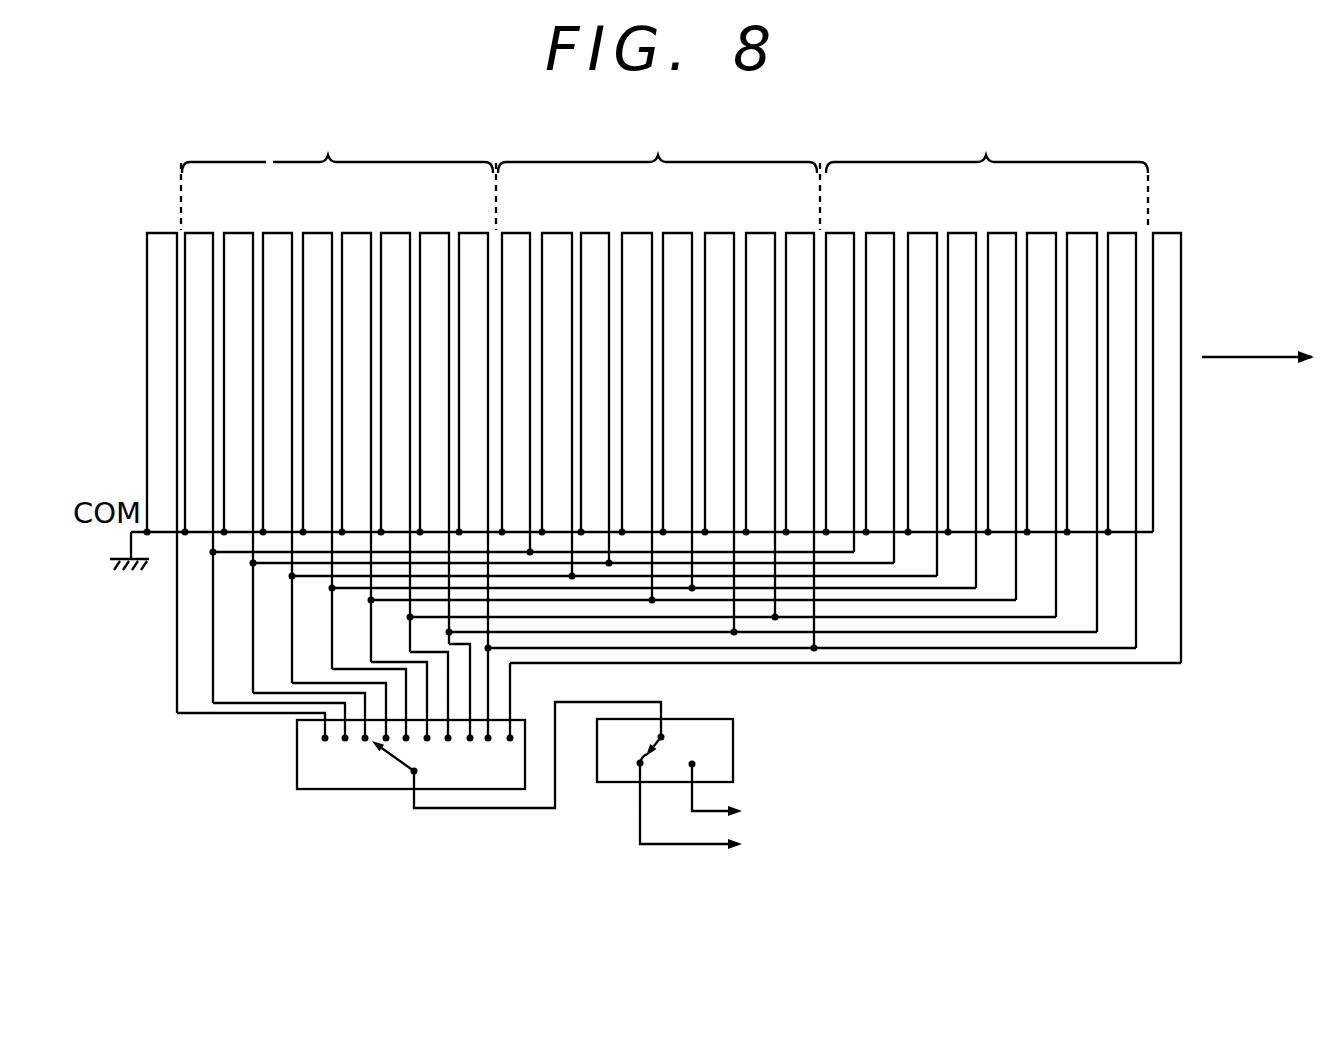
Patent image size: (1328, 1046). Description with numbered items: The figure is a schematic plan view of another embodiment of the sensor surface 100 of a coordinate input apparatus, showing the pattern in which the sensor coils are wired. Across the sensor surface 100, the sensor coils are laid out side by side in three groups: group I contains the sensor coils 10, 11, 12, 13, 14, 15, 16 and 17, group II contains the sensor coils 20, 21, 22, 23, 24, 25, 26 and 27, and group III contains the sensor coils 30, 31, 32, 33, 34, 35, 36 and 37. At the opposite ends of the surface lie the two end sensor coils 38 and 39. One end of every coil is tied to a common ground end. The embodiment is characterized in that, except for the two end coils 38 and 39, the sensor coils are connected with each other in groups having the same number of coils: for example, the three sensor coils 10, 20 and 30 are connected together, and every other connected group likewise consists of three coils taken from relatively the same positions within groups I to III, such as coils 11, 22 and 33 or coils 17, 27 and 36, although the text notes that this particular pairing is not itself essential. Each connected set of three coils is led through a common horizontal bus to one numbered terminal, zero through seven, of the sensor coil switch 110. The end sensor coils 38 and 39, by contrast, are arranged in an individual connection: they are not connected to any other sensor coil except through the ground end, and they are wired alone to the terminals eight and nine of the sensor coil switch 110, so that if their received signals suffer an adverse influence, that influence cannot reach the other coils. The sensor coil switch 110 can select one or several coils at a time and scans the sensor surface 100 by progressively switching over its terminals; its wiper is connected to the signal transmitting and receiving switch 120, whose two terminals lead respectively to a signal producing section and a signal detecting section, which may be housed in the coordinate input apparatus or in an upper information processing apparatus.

The sensor coil 10 is at (199, 233).
The sensor coil 11 is at (238, 233).
The sensor coil 12 is at (277, 233).
The sensor coil 13 is at (317, 233).
The sensor coil 14 is at (356, 233).
The sensor coil 15 is at (395, 233).
The sensor coil 16 is at (435, 233).
The sensor coil 17 is at (475, 233).
The sensor coil 20 is at (515, 233).
The sensor coil 21 is at (555, 233).
The sensor coil 22 is at (595, 233).
The sensor coil 23 is at (635, 233).
The sensor coil 24 is at (676, 233).
The sensor coil 25 is at (716, 233).
The sensor coil 26 is at (757, 233).
The sensor coil 27 is at (798, 233).
The sensor coil 30 is at (839, 233).
The sensor coil 31 is at (879, 233).
The sensor coil 32 is at (921, 233).
The sensor coil 33 is at (961, 233).
The sensor coil 34 is at (1001, 233).
The sensor coil 35 is at (1041, 233).
The sensor coil 36 is at (1081, 233).
The sensor coil 37 is at (1121, 233).
The sensor coil 38 is at (160, 233).
The sensor coil 39 is at (1168, 233).
The sensor surface 100 is at (1196, 265).
The sensor coil switch 110 is at (297, 760).
The signal transmitting and receiving switch 120 is at (733, 740).